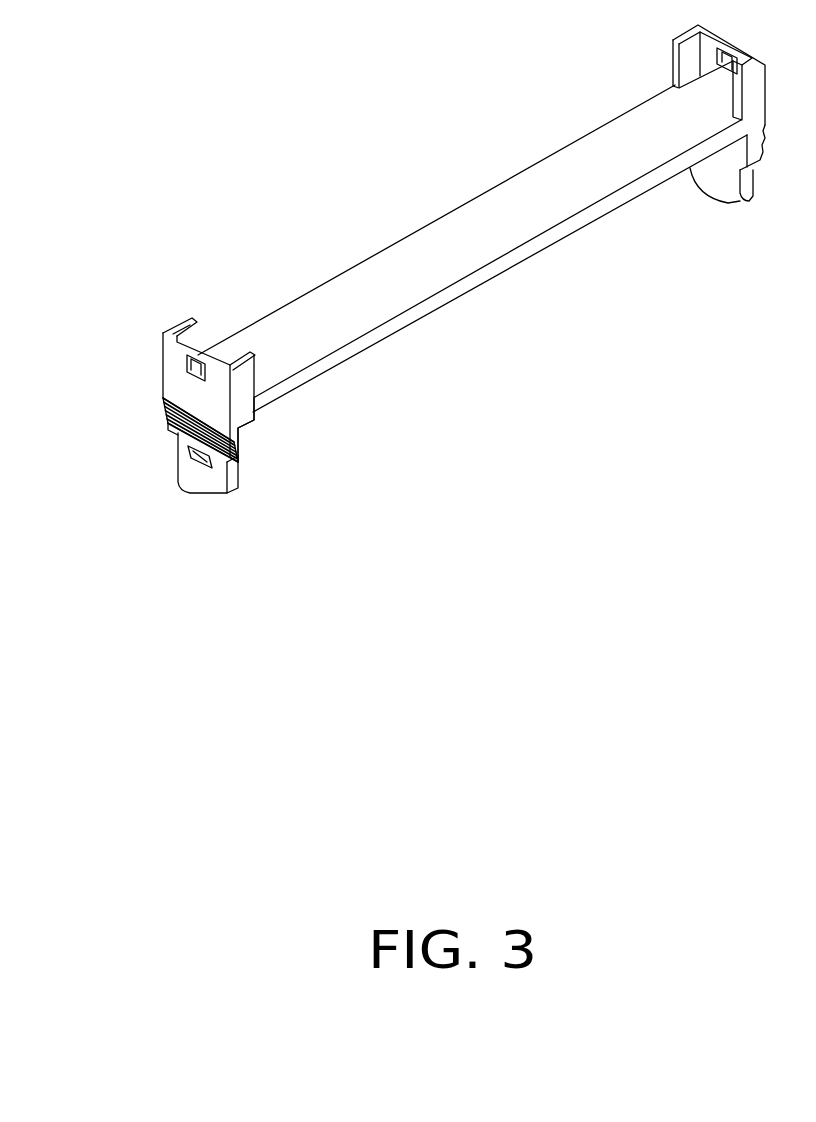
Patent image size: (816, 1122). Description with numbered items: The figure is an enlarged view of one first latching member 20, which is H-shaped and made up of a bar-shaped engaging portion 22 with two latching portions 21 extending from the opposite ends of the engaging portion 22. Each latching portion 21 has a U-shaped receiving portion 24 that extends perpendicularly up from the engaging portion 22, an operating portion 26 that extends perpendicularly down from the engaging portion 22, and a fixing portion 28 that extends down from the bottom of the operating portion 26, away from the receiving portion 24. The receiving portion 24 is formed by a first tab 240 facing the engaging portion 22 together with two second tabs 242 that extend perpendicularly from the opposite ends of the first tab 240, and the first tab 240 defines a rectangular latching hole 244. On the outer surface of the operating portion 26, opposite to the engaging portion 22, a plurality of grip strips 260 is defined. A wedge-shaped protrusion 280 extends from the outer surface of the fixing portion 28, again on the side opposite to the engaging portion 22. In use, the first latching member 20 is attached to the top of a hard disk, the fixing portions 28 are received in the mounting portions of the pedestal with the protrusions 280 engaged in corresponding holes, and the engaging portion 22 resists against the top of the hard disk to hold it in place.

The first latching member 20 is at (193, 208).
The latching portion 21 is at (148, 338).
The engaging portion 22 is at (350, 308).
The receiving portion 24 is at (208, 347).
The second tab 242 is at (182, 327).
The latching hole 244 is at (188, 366).
The first tab 240 is at (166, 410).
The grip strip 260 is at (177, 435).
The operating portion 26 is at (242, 435).
The fixing portion 28 is at (237, 473).
The protrusion 280 is at (190, 466).